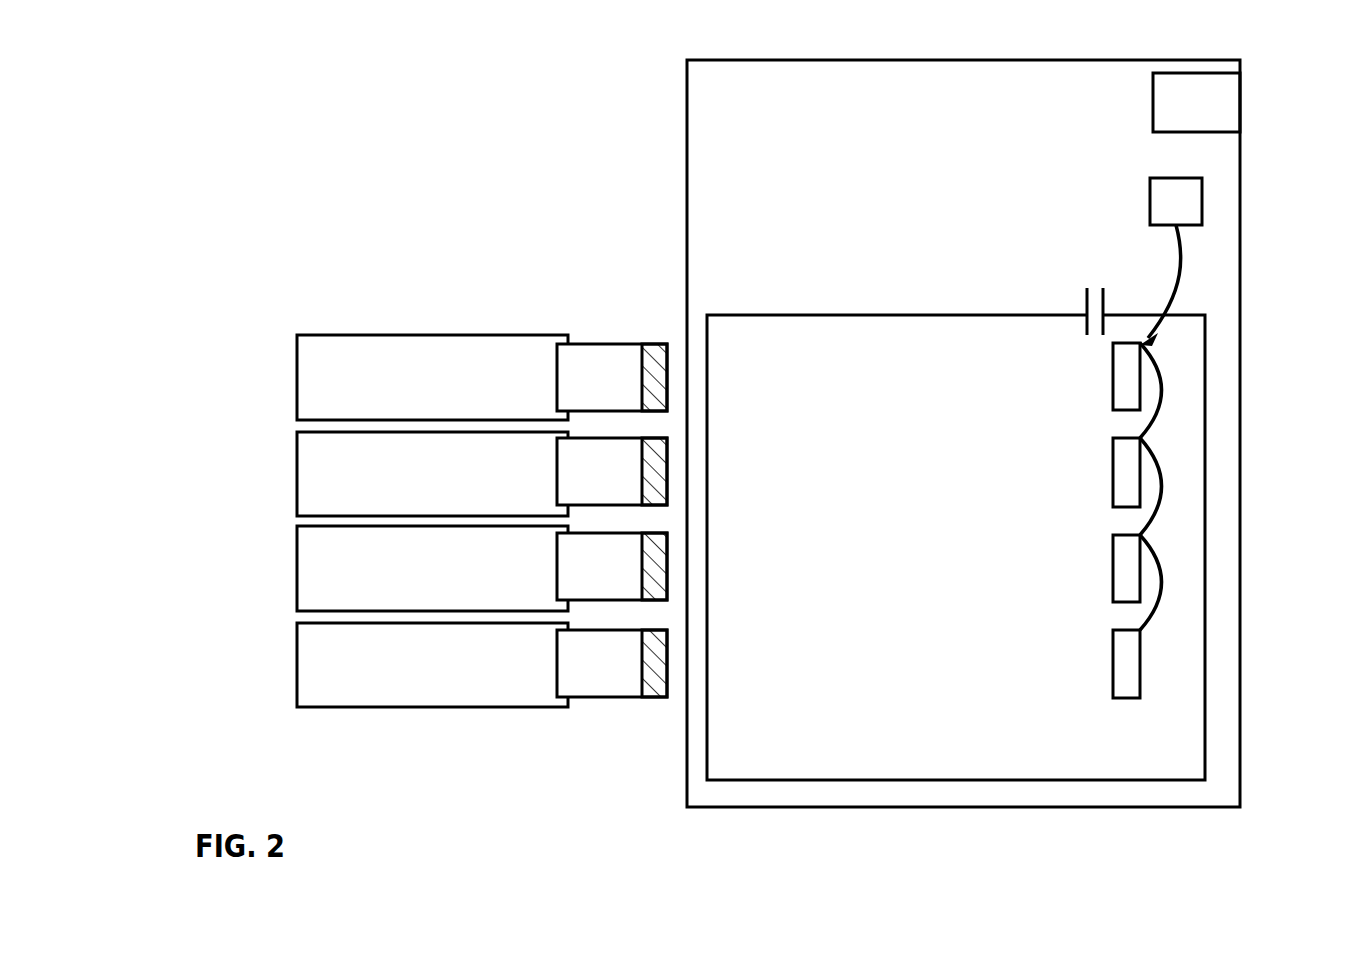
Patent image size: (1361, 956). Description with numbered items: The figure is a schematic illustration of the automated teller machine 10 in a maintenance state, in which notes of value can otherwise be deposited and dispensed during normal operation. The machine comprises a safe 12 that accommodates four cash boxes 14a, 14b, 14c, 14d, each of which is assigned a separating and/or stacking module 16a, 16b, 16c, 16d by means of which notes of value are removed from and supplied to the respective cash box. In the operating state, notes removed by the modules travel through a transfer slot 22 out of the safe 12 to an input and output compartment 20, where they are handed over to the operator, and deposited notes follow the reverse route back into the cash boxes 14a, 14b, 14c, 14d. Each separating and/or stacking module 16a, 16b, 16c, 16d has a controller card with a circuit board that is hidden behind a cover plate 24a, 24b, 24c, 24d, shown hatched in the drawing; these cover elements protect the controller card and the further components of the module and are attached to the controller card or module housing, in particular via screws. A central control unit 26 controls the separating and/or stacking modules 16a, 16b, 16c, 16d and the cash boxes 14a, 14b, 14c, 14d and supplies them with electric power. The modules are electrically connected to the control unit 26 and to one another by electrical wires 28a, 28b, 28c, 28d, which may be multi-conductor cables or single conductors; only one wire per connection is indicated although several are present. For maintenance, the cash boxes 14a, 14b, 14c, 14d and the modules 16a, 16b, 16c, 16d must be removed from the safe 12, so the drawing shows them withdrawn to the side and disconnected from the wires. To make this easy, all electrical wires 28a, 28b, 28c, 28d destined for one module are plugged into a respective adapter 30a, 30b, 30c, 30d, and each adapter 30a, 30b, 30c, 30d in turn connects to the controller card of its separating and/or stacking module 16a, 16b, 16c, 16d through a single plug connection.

The automated teller machine 10 is at (638, 98).
The safe 12 is at (728, 764).
The cash box 14a is at (338, 380).
The cash box 14b is at (338, 476).
The cash box 14c is at (338, 572).
The cash box 14d is at (338, 668).
The separating and/or stacking module 16a is at (608, 373).
The separating and/or stacking module 16b is at (608, 469).
The separating and/or stacking module 16c is at (608, 565).
The separating and/or stacking module 16d is at (608, 661).
The input and output compartment 20 is at (1218, 102).
The transfer slot 22 is at (1085, 305).
The cover plate 24a is at (655, 398).
The cover plate 24b is at (655, 494).
The cover plate 24c is at (655, 590).
The cover plate 24d is at (655, 686).
The central control unit 26 is at (1190, 200).
The electrical wire 28a is at (1180, 253).
The electrical wire 28b is at (1157, 352).
The electrical wire 28c is at (1158, 455).
The electrical wire 28d is at (1158, 552).
The adapter 30a is at (1130, 383).
The adapter 30b is at (1130, 485).
The adapter 30c is at (1130, 590).
The adapter 30d is at (1130, 676).